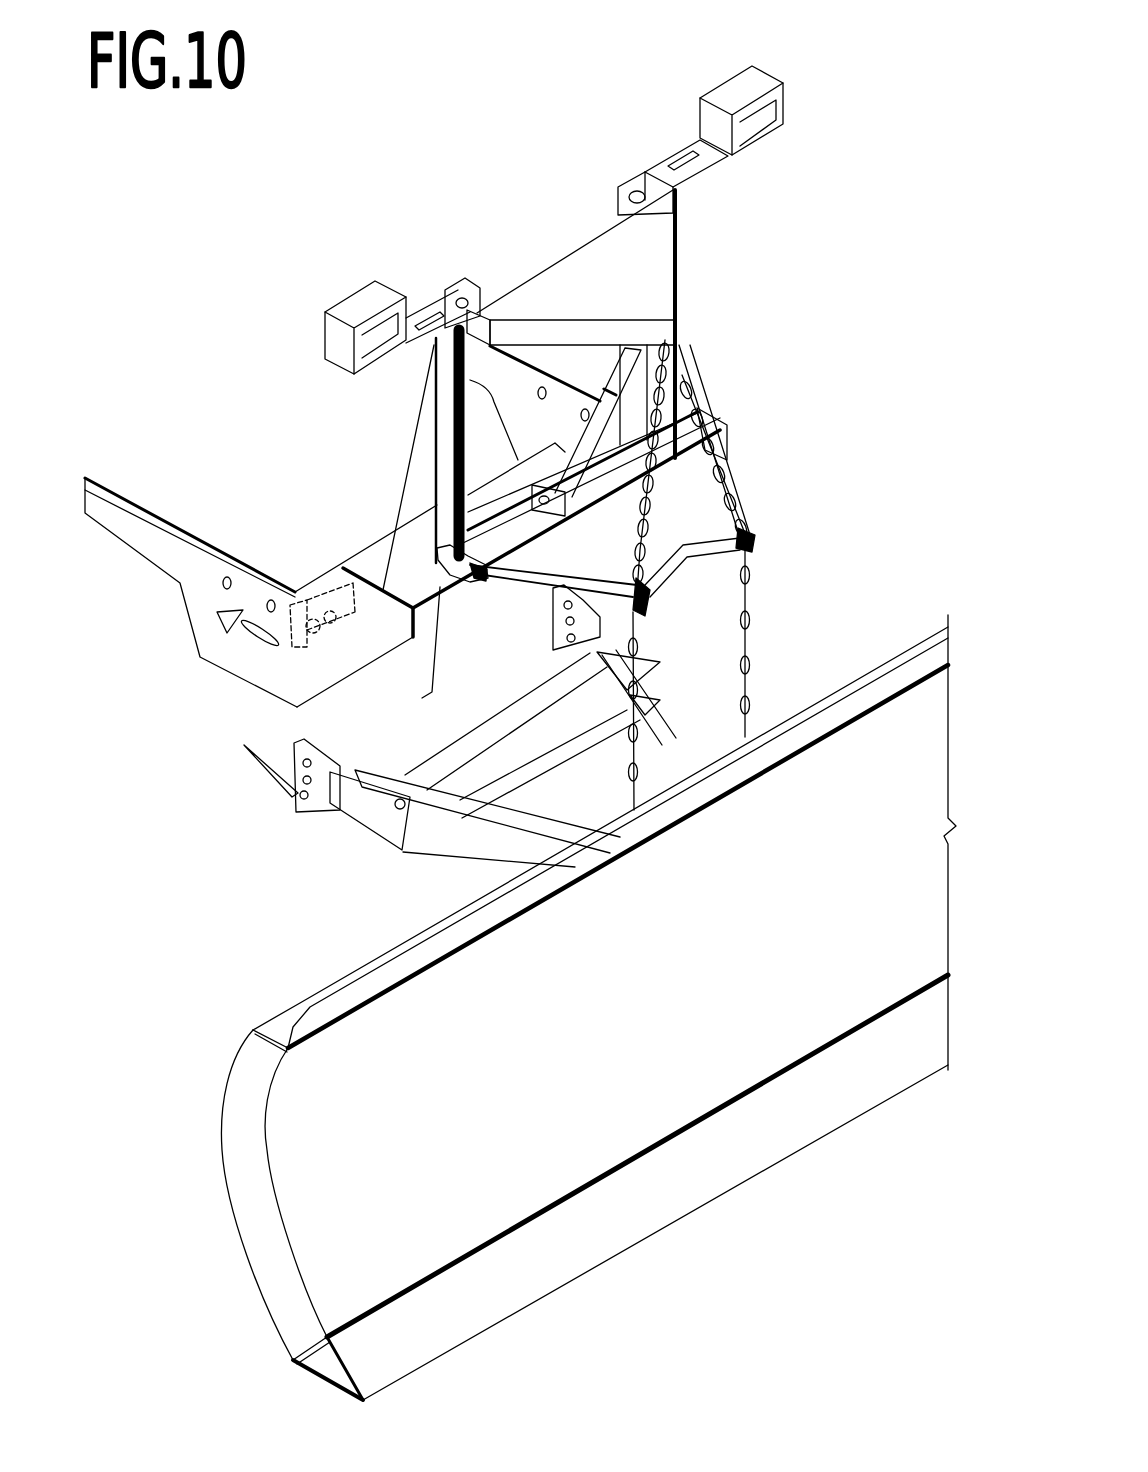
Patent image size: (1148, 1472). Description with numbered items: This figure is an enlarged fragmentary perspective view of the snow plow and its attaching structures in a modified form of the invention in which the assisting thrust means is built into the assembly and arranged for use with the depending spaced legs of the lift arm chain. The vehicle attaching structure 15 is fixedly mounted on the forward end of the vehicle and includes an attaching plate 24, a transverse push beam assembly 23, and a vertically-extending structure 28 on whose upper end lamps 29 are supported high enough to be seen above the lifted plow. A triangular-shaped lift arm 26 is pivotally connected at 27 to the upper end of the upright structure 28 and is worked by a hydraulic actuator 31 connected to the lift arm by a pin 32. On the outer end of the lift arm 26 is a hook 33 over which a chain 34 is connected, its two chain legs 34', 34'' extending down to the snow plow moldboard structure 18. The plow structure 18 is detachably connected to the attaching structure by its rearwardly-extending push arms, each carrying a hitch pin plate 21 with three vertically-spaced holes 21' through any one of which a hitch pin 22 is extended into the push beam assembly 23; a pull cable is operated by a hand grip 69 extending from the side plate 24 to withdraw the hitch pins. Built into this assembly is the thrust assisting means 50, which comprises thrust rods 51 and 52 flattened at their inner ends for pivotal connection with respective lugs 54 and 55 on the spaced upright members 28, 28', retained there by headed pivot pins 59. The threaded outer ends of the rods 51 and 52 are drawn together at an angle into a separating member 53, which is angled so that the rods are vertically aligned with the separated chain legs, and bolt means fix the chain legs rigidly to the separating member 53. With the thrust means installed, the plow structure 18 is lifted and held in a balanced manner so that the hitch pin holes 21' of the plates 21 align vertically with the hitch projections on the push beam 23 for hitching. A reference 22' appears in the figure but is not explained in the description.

The attaching structure 15 is at (560, 253).
The snow plow moldboard structure 18 is at (712, 1001).
The hitch pin plate 21 is at (421, 760).
The hitch pin mounting holes 21' is at (247, 760).
The hitch pin 22 is at (473, 698).
The hitch pin 22' is at (301, 560).
The push beam assembly 23 is at (250, 640).
The attaching plate 24 is at (197, 599).
The triangular-shaped lift arm 26 is at (668, 278).
The pivot 27 is at (618, 190).
The vertically-extending structure 28 is at (403, 460).
The upright member 28' is at (598, 422).
The lamps 29 is at (707, 92).
The hydraulic actuator 31 is at (575, 429).
The pin 32 is at (560, 510).
The hook 33 is at (683, 348).
The chain 34 is at (745, 456).
The chain leg 34' is at (580, 711).
The chain leg 34'' is at (791, 642).
The thrust assisting means 50 is at (486, 578).
The thrust rod 51 is at (537, 563).
The thrust rod 52 is at (716, 530).
The separating member 53 is at (740, 560).
The lug 54 is at (413, 649).
The lug 55 is at (695, 415).
The headed pivot pin 59 is at (460, 595).
The hand grip 69 is at (218, 628).